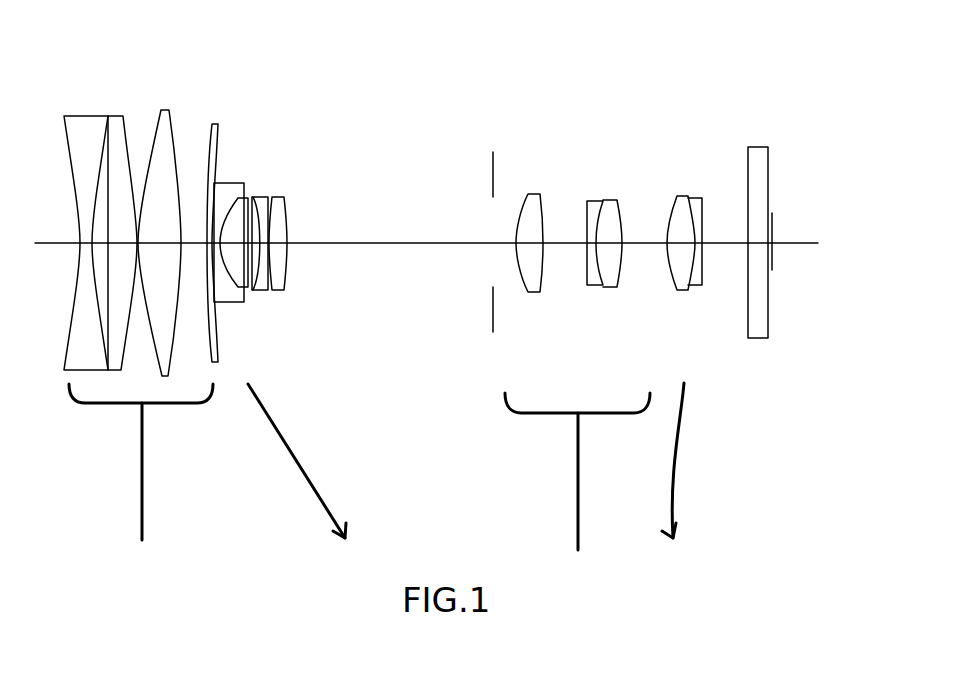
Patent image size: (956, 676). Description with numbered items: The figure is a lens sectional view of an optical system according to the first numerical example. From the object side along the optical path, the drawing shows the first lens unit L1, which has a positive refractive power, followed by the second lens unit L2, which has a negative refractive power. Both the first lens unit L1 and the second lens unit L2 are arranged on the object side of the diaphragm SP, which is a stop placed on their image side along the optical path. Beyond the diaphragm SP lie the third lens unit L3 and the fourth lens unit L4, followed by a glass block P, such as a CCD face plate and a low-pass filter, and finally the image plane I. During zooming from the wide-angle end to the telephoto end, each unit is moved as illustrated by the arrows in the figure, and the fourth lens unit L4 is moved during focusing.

The first lens unit L1 is at (80, 102).
The second lens unit L2 is at (213, 102).
The third lens unit L3 is at (518, 102).
The fourth lens unit L4 is at (669, 102).
The diaphragm SP is at (493, 257).
The glass block P is at (769, 102).
The image plane I is at (772, 223).